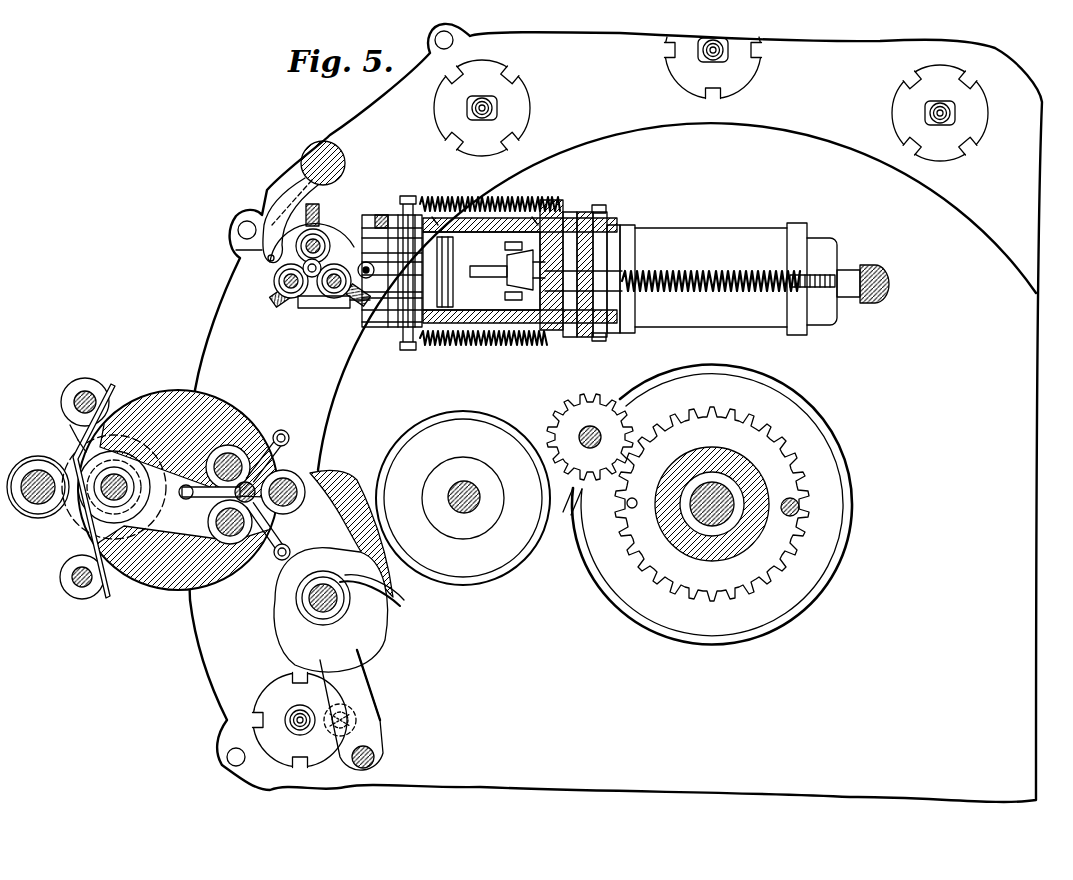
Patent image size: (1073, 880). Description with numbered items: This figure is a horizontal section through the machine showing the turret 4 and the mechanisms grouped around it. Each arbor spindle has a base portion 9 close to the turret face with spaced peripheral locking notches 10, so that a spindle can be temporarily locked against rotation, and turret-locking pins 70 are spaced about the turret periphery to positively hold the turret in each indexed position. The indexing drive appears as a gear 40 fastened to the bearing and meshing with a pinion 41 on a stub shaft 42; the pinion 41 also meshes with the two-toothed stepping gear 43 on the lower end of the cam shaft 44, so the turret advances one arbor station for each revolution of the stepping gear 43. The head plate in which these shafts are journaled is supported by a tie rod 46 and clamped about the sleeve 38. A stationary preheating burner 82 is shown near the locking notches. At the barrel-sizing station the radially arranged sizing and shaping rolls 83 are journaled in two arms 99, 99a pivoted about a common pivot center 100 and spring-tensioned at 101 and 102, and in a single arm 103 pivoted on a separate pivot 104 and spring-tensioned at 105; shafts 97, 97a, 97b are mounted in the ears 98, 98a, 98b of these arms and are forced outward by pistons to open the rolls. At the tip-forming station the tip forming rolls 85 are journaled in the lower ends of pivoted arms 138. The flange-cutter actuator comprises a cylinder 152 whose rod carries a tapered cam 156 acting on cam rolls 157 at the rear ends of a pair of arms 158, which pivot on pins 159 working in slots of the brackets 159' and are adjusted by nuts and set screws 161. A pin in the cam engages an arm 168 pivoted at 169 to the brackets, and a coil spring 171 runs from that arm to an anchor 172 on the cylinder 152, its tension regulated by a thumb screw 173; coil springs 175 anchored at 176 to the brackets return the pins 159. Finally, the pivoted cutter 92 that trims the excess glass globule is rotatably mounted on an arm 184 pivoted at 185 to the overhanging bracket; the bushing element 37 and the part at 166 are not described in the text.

The turret 4 is at (1038, 166).
The base portion 9 is at (520, 102).
The locking notches 10 is at (514, 82).
The gear 37 is at (716, 520).
The sleeve 38 is at (728, 460).
The gear 40 is at (800, 538).
The pinion 41 is at (550, 412).
The stub shaft 42 is at (590, 430).
The stepping gear 43 is at (560, 520).
The cam shaft 44 is at (472, 506).
The tie rod 46 is at (32, 476).
The turret-locking pins 70 is at (435, 40).
The preheating burners 82 is at (358, 718).
The sizing and shaping rolls 83 is at (268, 440).
The tip forming rolls 85 is at (324, 238).
The cutter 92 is at (240, 260).
The shaft 97 is at (76, 396).
The shaft 97a is at (74, 585).
The shaft 97b is at (376, 754).
The ear 98 is at (97, 384).
The ear 98a is at (106, 600).
The ear 98b is at (372, 692).
The pivoted arm 99 is at (166, 393).
The pivoted arm 99a is at (167, 580).
The common pivot center 100 is at (110, 492).
The spring tension 101 is at (78, 442).
The spring tension 102 is at (72, 426).
The arm 103 is at (372, 560).
The pivot 104 is at (332, 605).
The spring tension 105 is at (402, 607).
The arms 138 is at (320, 205).
The cylinder 152 is at (705, 232).
The tapered cam 156 is at (556, 212).
The cam rolls 157 is at (500, 280).
The arms 158 is at (470, 262).
The pivot pins 159 is at (415, 267).
The brackets 159' is at (485, 265).
The nuts and set screws 161 is at (333, 309).
The bracket 166 is at (383, 222).
The arm 168 is at (520, 242).
The pivot 169 is at (600, 232).
The coil spring 171 is at (707, 270).
The anchor 172 is at (830, 272).
The thumb screw 173 is at (870, 300).
The coil springs 175 is at (452, 198).
The anchor 176 is at (600, 205).
The arm 184 is at (272, 192).
The pivot 185 is at (316, 150).